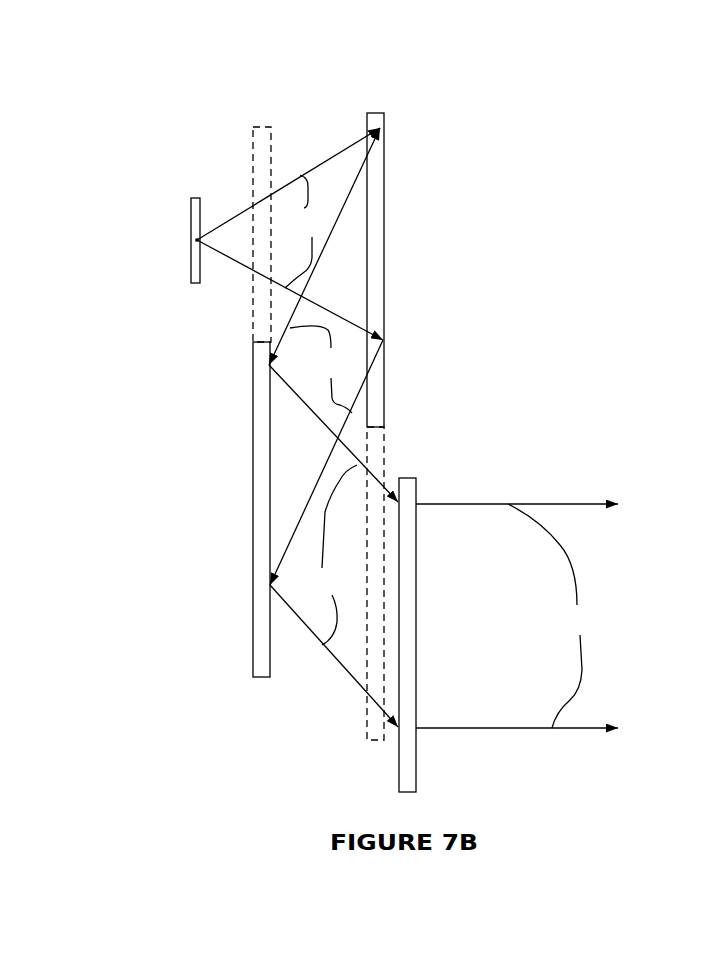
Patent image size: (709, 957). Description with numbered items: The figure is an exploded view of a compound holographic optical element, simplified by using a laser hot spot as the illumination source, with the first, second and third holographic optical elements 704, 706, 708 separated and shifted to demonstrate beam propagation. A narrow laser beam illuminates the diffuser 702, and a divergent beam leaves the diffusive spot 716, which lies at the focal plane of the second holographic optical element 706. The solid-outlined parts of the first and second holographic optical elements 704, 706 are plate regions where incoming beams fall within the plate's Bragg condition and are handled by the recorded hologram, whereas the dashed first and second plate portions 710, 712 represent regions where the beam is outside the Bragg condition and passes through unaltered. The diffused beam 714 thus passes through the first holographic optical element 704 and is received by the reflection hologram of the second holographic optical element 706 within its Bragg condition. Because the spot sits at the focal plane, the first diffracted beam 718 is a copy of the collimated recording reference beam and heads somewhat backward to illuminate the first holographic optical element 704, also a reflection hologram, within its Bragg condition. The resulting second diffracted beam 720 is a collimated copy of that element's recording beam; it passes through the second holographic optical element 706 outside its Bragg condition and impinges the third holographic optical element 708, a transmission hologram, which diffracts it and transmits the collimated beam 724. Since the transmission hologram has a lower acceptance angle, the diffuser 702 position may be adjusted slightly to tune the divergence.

The diffuser 702 is at (191, 283).
The diffusive spot 716 is at (196, 240).
The first plate portion 710 is at (272, 124).
The first holographic optical element 704 is at (252, 670).
The second holographic optical element 706 is at (376, 113).
The second plate portion 712 is at (388, 452).
The third holographic optical element 708 is at (399, 755).
The diffused beam 714 is at (290, 234).
The first diffracted beam 718 is at (326, 356).
The second diffracted beam 720 is at (333, 546).
The collimated beam 724 is at (517, 616).